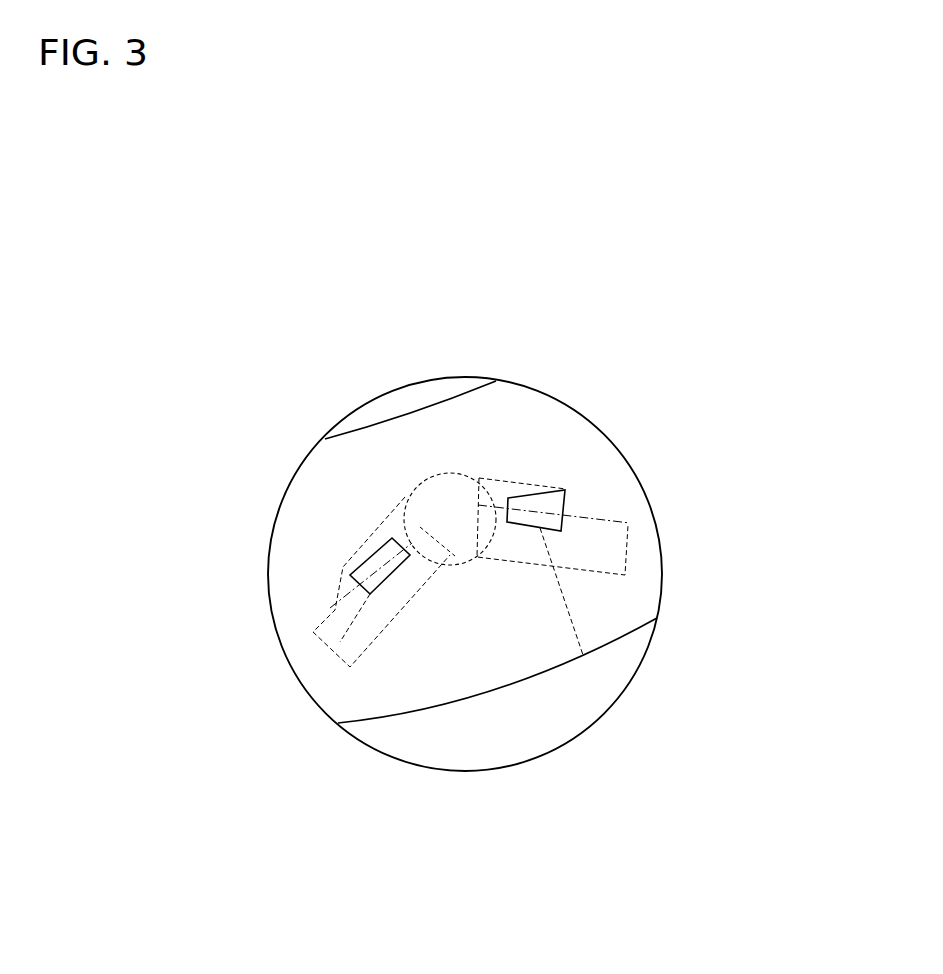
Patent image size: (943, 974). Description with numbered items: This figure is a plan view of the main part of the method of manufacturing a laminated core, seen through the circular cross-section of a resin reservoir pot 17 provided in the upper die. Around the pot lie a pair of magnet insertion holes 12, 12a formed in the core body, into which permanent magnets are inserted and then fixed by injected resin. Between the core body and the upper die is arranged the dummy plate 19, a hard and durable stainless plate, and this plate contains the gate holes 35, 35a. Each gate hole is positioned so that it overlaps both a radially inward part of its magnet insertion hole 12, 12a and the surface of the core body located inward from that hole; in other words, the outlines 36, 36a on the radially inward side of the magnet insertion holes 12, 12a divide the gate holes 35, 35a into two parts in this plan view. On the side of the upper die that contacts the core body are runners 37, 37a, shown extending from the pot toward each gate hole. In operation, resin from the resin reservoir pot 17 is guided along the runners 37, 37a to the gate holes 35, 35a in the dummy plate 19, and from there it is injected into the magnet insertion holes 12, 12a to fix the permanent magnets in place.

The magnet insertion hole 12 is at (634, 553).
The magnet insertion hole 12a is at (377, 643).
The resin reservoir pot 17 is at (459, 474).
The dummy plate 19 is at (487, 696).
The gate hole 35 is at (583, 655).
The gate hole 35a is at (340, 642).
The outline 36 is at (606, 517).
The outline 36a is at (338, 606).
The runner 37 is at (530, 495).
The runner 37a is at (378, 535).